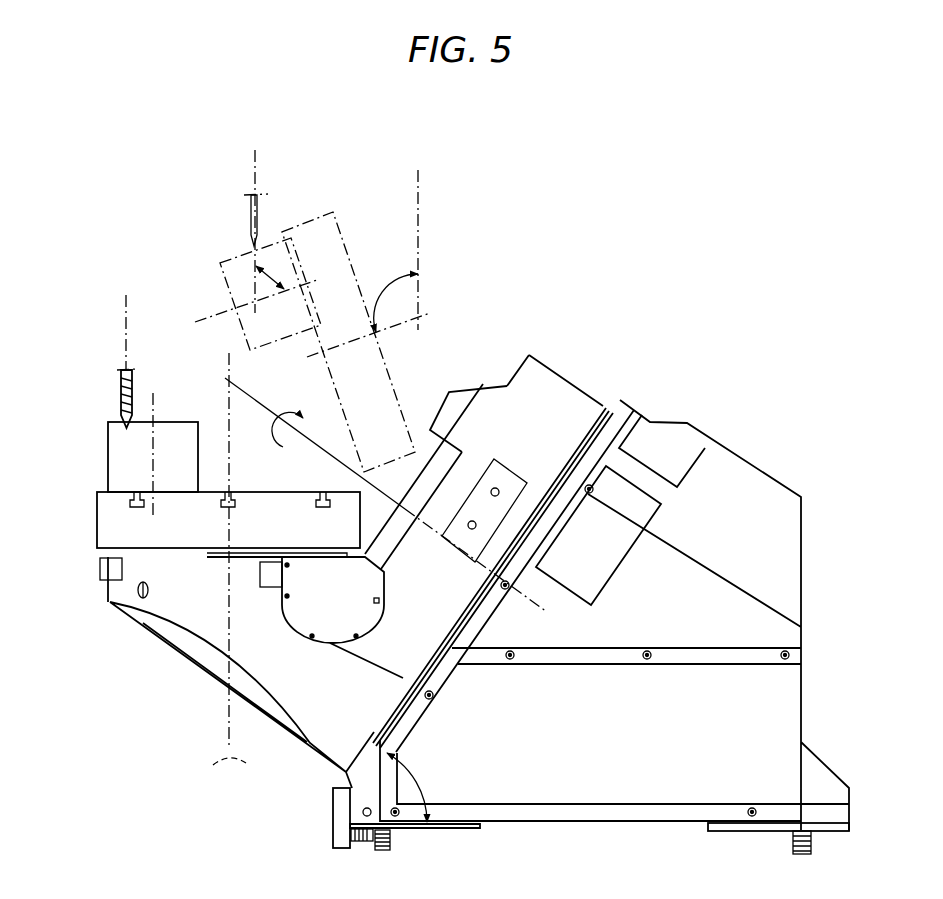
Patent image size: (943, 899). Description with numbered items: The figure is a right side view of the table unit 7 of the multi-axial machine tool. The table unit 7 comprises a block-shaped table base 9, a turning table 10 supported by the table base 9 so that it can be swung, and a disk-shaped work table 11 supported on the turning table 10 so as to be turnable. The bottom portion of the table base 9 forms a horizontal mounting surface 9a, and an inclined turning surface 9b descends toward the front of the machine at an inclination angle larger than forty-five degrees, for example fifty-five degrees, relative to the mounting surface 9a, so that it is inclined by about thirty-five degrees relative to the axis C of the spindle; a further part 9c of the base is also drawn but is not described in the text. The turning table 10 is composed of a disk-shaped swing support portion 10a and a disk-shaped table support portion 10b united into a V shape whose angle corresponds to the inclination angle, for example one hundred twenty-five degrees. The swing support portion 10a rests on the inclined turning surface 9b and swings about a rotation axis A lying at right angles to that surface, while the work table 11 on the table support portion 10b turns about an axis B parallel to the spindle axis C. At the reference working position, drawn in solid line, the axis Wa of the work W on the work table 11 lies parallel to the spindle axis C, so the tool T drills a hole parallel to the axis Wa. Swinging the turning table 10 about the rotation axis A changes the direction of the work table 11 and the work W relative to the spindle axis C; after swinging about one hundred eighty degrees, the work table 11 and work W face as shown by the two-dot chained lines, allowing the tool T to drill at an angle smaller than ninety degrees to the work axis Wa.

The table unit 7 is at (476, 321).
The table base 9 is at (744, 453).
The mounting surface 9a is at (478, 829).
The inclined turning surface 9b is at (592, 428).
The adjusting screw 9c is at (390, 838).
The turning table 10 is at (560, 375).
The swing support portion 10a is at (497, 410).
The table support portion 10b is at (137, 553).
The work table 11 is at (347, 219).
The work W is at (218, 262).
The axis of the work Wa is at (196, 320).
The tool T is at (247, 210).
The rotation axis A is at (550, 612).
The axis B is at (226, 741).
The axis of the spindle C is at (122, 308).